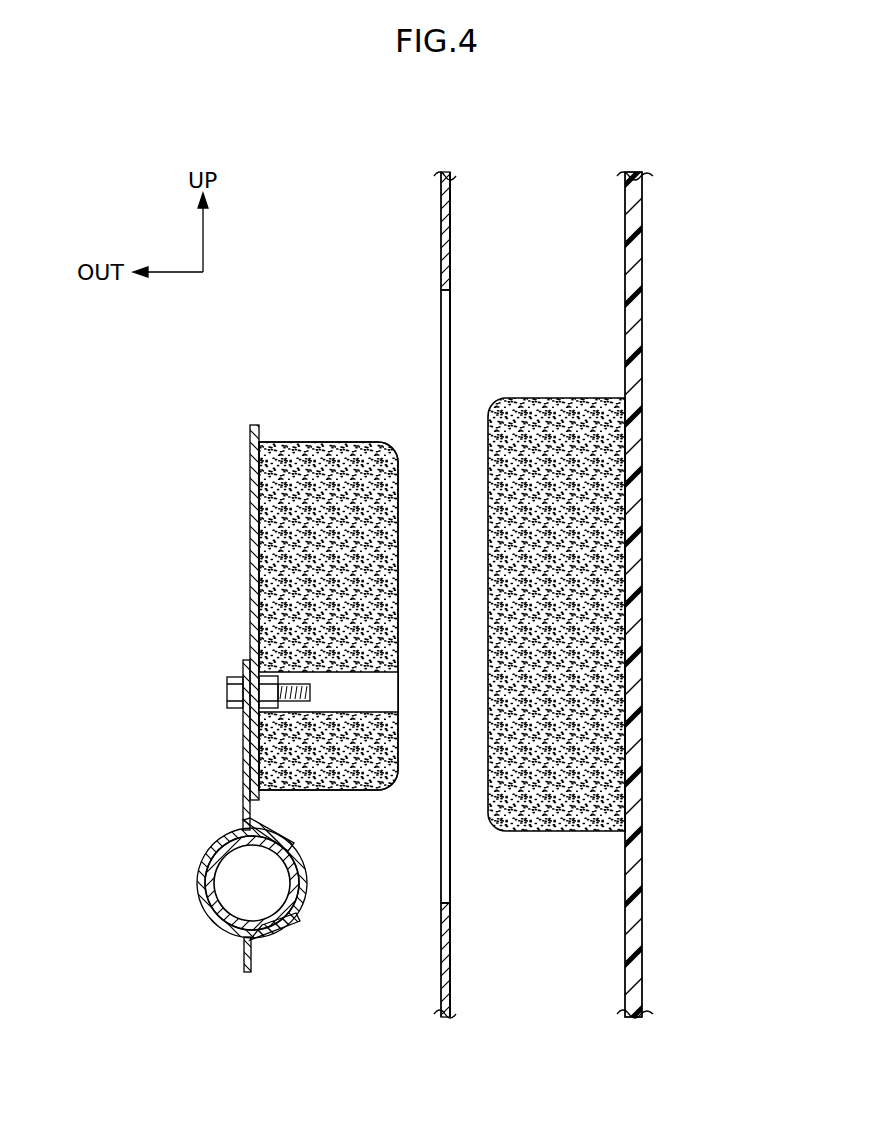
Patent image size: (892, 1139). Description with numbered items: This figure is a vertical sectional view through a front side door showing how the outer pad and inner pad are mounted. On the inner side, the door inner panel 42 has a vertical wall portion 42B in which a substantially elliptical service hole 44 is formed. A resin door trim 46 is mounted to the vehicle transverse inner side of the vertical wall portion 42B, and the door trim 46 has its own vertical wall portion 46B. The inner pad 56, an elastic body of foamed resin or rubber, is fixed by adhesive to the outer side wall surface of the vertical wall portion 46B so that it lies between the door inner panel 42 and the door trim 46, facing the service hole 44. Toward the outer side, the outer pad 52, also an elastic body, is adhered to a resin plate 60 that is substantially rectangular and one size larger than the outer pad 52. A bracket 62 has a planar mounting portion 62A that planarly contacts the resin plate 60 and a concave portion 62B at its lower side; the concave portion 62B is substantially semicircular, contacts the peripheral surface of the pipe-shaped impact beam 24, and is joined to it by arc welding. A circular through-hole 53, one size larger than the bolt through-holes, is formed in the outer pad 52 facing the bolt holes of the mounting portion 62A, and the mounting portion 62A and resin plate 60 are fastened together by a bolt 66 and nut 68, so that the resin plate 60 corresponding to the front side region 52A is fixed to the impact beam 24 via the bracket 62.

The impact beam 24 is at (197, 885).
The door inner panel 42 is at (493, 595).
The vertical wall portion 42B is at (447, 237).
The service hole 44 is at (444, 285).
The door trim 46 is at (680, 595).
The vertical wall portion 46B is at (635, 300).
The outer pad 52 is at (349, 573).
The front side region 52A is at (372, 470).
The through-hole 53 is at (358, 712).
The inner pad 56 is at (570, 398).
The resin plate 60 is at (250, 492).
The bracket 62 is at (264, 816).
The mounting portion 62A is at (244, 781).
The concave portion 62B is at (302, 903).
The bolt 66 is at (227, 690).
The nut 68 is at (268, 676).